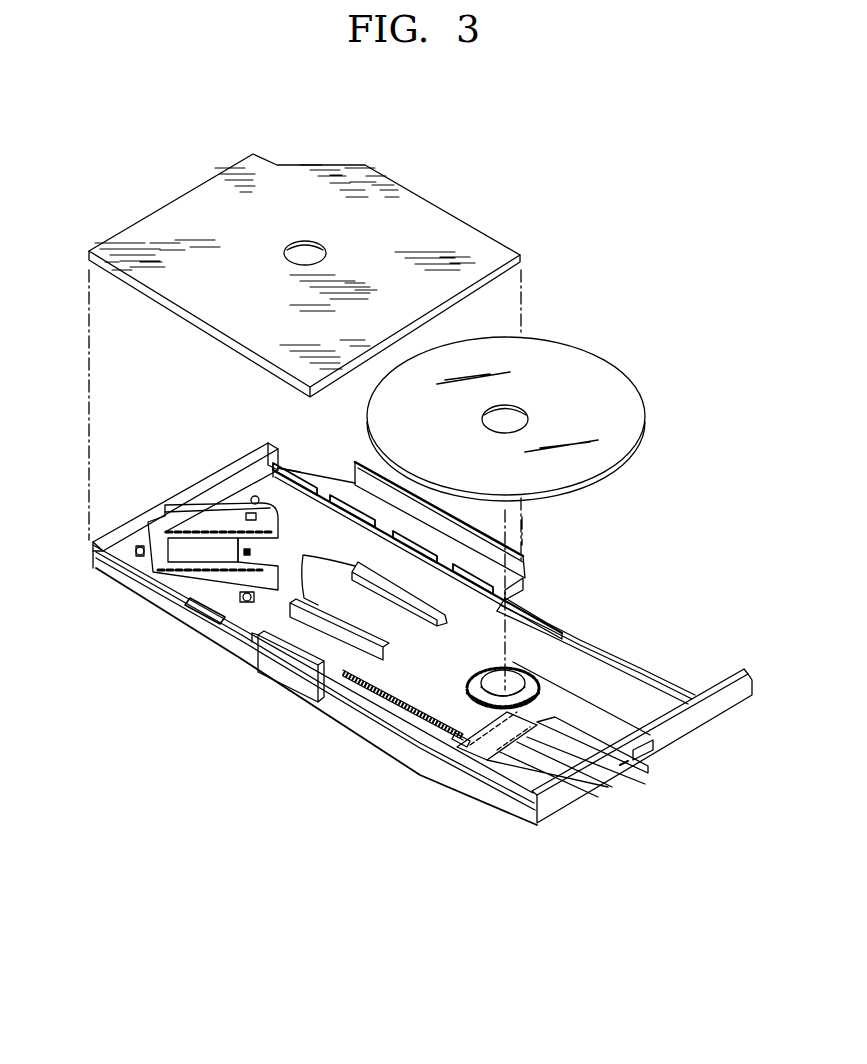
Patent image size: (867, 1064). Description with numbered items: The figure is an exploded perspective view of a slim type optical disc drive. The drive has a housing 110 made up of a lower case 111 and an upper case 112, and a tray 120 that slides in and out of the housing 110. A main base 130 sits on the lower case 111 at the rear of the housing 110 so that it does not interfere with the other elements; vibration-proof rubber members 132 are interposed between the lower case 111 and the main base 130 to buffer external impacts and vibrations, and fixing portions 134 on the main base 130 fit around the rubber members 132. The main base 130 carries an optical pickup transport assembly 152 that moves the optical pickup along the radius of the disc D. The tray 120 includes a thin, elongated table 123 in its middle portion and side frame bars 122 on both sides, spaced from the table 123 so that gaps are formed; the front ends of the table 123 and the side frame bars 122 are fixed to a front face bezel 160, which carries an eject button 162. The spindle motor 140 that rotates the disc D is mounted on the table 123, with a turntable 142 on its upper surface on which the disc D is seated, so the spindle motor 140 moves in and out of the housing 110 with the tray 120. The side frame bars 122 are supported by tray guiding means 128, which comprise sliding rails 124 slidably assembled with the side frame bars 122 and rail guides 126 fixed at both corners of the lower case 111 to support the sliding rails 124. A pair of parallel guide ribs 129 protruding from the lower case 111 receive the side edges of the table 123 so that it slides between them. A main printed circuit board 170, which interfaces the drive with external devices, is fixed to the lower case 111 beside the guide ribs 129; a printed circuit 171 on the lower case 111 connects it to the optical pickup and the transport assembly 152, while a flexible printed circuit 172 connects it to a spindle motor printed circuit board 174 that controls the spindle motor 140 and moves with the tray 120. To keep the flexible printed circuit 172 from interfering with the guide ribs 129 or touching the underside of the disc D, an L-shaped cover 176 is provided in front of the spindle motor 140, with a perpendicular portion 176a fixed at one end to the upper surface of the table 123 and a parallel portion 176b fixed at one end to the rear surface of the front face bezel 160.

The housing 110 is at (157, 373).
The lower case 111 is at (230, 470).
The upper case 112 is at (247, 344).
The disc D is at (591, 370).
The tray 120 is at (652, 661).
The side frame bars 122 is at (600, 656).
The table 123 is at (454, 648).
The sliding rails 124 is at (558, 628).
The rail guides 126 is at (522, 582).
The tray guiding means 128 is at (623, 595).
The guide ribs 129 is at (303, 562).
The main base 130 is at (145, 588).
The vibration-proof rubber members 132 is at (233, 615).
The fixing portions 134 is at (150, 600).
The spindle motor 140 is at (497, 680).
The turntable 142 is at (530, 690).
The optical pickup transport assembly 152 is at (198, 518).
The front face bezel 160 is at (650, 746).
The eject button 162 is at (655, 752).
The main printed circuit board 170 is at (280, 642).
The printed circuit 171 is at (175, 623).
The flexible printed circuit 172 is at (413, 720).
The spindle motor printed circuit board 174 is at (568, 716).
The cover 176 is at (572, 800).
The perpendicular portion 176a is at (552, 753).
The parallel portion 176b is at (528, 775).